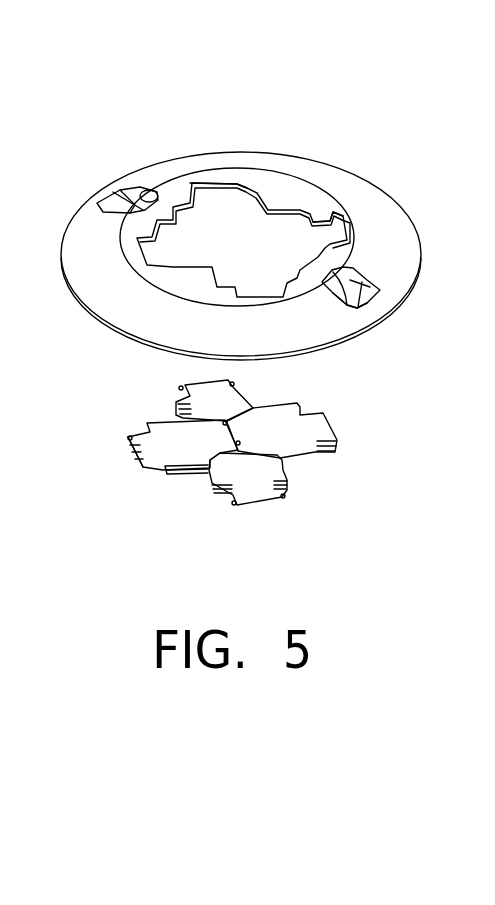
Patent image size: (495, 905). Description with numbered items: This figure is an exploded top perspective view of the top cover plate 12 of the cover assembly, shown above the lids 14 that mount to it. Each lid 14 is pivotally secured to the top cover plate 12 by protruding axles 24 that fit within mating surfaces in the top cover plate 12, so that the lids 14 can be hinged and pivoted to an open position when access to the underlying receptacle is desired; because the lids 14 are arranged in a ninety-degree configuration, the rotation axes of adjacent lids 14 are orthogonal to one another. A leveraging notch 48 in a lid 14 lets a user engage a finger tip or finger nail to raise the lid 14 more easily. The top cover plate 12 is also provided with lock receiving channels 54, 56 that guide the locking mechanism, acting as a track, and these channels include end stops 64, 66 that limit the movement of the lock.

The top cover plate 12 is at (150, 186).
The lid 14 is at (232, 405).
The protruding axle 24 is at (333, 212).
The leveraging notch 48 is at (130, 441).
The lock receiving channel 54 is at (367, 303).
The lock receiving channel 56 is at (174, 257).
The end stop 64 is at (250, 188).
The end stop 66 is at (346, 303).